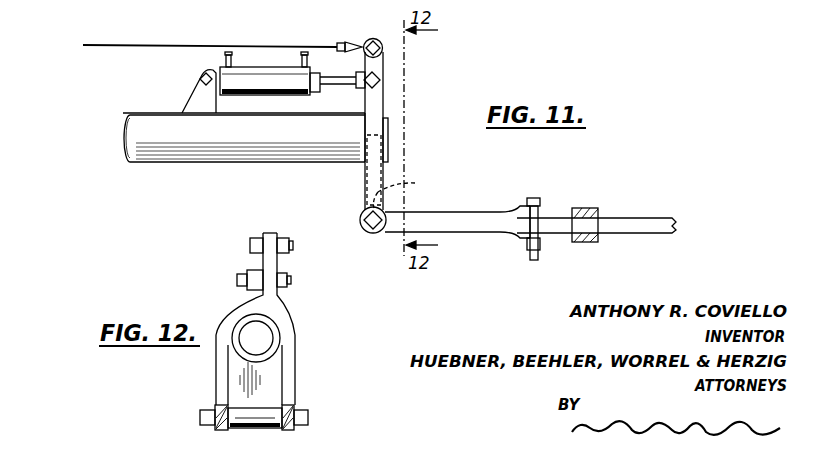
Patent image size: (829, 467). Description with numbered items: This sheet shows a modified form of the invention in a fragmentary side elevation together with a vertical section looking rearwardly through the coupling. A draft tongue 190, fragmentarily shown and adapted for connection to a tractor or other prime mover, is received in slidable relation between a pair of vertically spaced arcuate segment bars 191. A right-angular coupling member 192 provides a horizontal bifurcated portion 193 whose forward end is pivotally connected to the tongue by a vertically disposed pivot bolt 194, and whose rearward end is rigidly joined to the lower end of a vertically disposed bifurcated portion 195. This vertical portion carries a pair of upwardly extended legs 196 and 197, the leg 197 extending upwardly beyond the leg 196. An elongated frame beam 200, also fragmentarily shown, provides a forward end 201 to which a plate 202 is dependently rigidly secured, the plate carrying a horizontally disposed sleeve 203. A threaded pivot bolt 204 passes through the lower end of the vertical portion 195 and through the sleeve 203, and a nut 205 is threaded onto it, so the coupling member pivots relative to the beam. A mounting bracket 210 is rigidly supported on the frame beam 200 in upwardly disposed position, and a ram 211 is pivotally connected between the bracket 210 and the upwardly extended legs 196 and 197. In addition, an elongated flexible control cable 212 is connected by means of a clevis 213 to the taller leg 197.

In FIG. 11, the draft tongue 190 is at (641, 218).
In FIG. 11, the arcuate segment bars 191 is at (592, 210).
In FIG. 11, the right-angular coupling member 192 is at (362, 178).
In FIG. 12, the right-angular coupling member 192 is at (221, 338).
In FIG. 11, the horizontal bifurcated portion 193 is at (440, 218).
In FIG. 12, the horizontal bifurcated portion 193 is at (245, 431).
In FIG. 11, the pivot bolt 194 is at (542, 205).
In FIG. 11, the vertically disposed bifurcated portion 195 is at (376, 106).
In FIG. 12, the vertically disposed bifurcated portion 195 is at (218, 358).
In FIG. 11, the upwardly extended leg 196 is at (366, 126).
In FIG. 12, the upwardly extended leg 196 is at (235, 318).
In FIG. 11, the upwardly extended leg 197 is at (377, 62).
In FIG. 12, the upwardly extended leg 197 is at (283, 318).
In FIG. 11, the frame beam 200 is at (176, 144).
In FIG. 12, the frame beam 200 is at (273, 343).
In FIG. 11, the forward end 201 is at (381, 143).
In FIG. 11, the plate 202 is at (411, 190).
In FIG. 12, the plate 202 is at (266, 372).
In FIG. 12, the sleeve 203 is at (262, 410).
In FIG. 11, the threaded pivot bolt 204 is at (361, 226).
In FIG. 12, the threaded pivot bolt 204 is at (207, 410).
In FIG. 12, the nut 205 is at (308, 420).
In FIG. 11, the mounting bracket 210 is at (196, 95).
In FIG. 11, the ram 211 is at (261, 67).
In FIG. 12, the ram 211 is at (258, 272).
In FIG. 11, the flexible control cable 212 is at (133, 45).
In FIG. 11, the clevis 213 is at (360, 44).
In FIG. 12, the clevis 213 is at (258, 240).